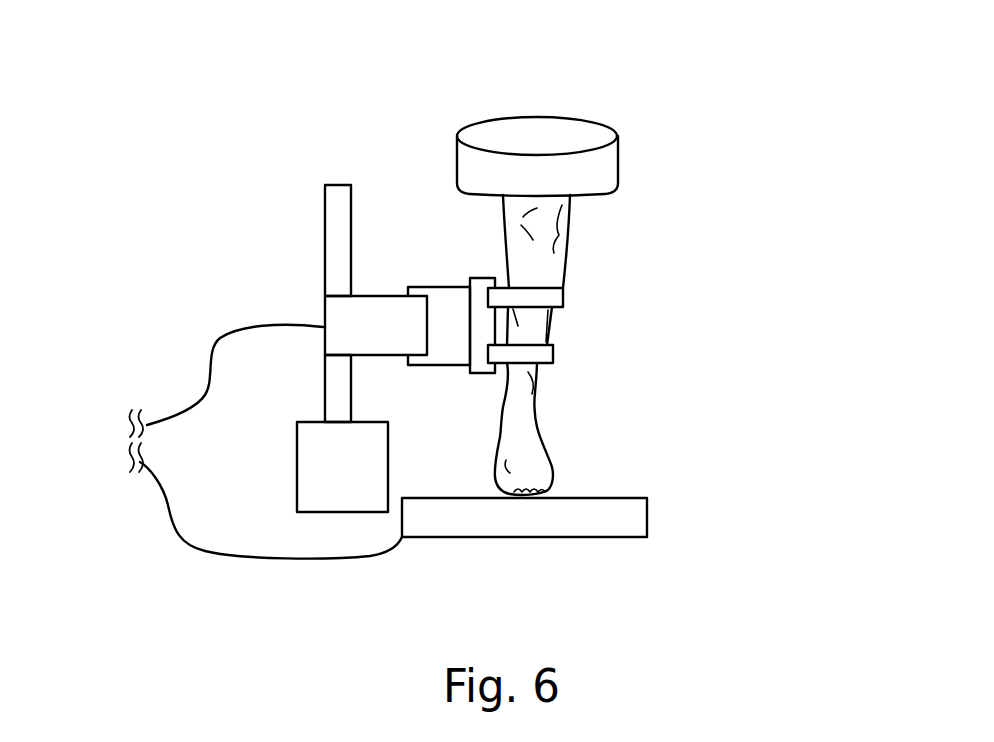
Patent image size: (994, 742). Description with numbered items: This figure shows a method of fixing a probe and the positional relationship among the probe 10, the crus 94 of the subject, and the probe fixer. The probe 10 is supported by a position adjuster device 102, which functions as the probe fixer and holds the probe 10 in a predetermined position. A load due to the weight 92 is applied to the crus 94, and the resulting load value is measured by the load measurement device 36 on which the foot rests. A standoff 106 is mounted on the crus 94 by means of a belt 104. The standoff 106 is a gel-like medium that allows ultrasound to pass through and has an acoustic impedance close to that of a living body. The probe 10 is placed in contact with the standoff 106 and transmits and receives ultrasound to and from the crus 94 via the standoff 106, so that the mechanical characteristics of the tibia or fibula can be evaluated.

The probe 10 is at (442, 287).
The load measurement device 36 is at (563, 588).
The weight 92 is at (585, 120).
The crus 94 is at (558, 328).
The position adjuster device 102 is at (325, 229).
The belt 104 is at (563, 293).
The standoff 106 is at (492, 277).